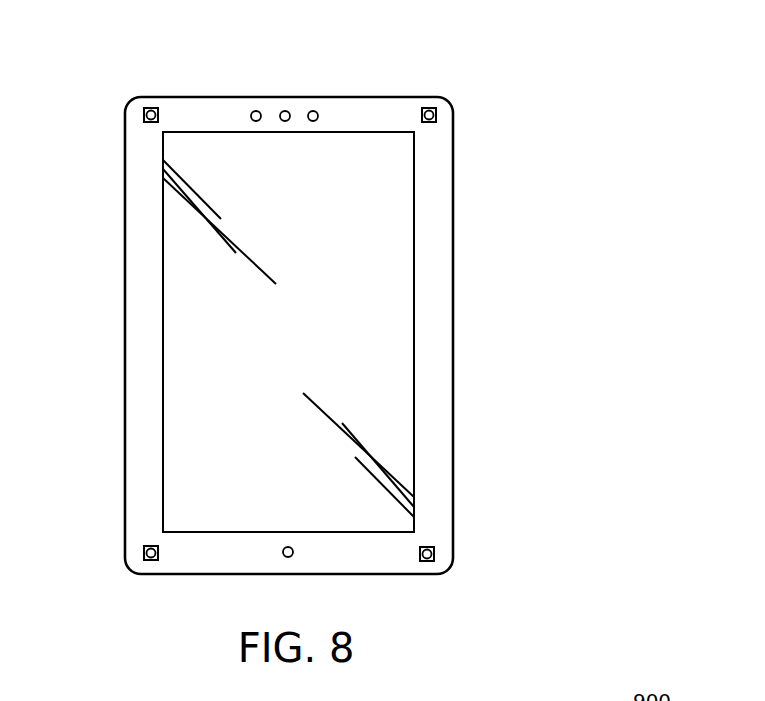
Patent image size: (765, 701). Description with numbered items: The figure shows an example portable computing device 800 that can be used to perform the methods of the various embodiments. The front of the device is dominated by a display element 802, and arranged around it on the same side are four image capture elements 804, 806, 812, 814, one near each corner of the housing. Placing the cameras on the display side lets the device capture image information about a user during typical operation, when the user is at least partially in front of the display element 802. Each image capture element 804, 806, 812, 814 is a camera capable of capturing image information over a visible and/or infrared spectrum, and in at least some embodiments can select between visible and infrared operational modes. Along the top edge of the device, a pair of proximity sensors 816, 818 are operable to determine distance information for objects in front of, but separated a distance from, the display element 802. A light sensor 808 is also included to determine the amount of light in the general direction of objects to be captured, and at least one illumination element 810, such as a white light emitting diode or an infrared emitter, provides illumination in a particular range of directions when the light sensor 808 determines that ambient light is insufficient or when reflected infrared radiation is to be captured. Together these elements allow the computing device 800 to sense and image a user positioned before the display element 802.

The computing device 800 is at (594, 145).
The display element 802 is at (163, 144).
The image capture element 804 is at (151, 108).
The image capture element 806 is at (430, 108).
The light sensor 808 is at (315, 111).
The illumination element 810 is at (254, 111).
The image capture element 812 is at (151, 560).
The image capture element 814 is at (428, 561).
The proximity sensor 816 is at (285, 111).
The proximity sensor 818 is at (292, 556).